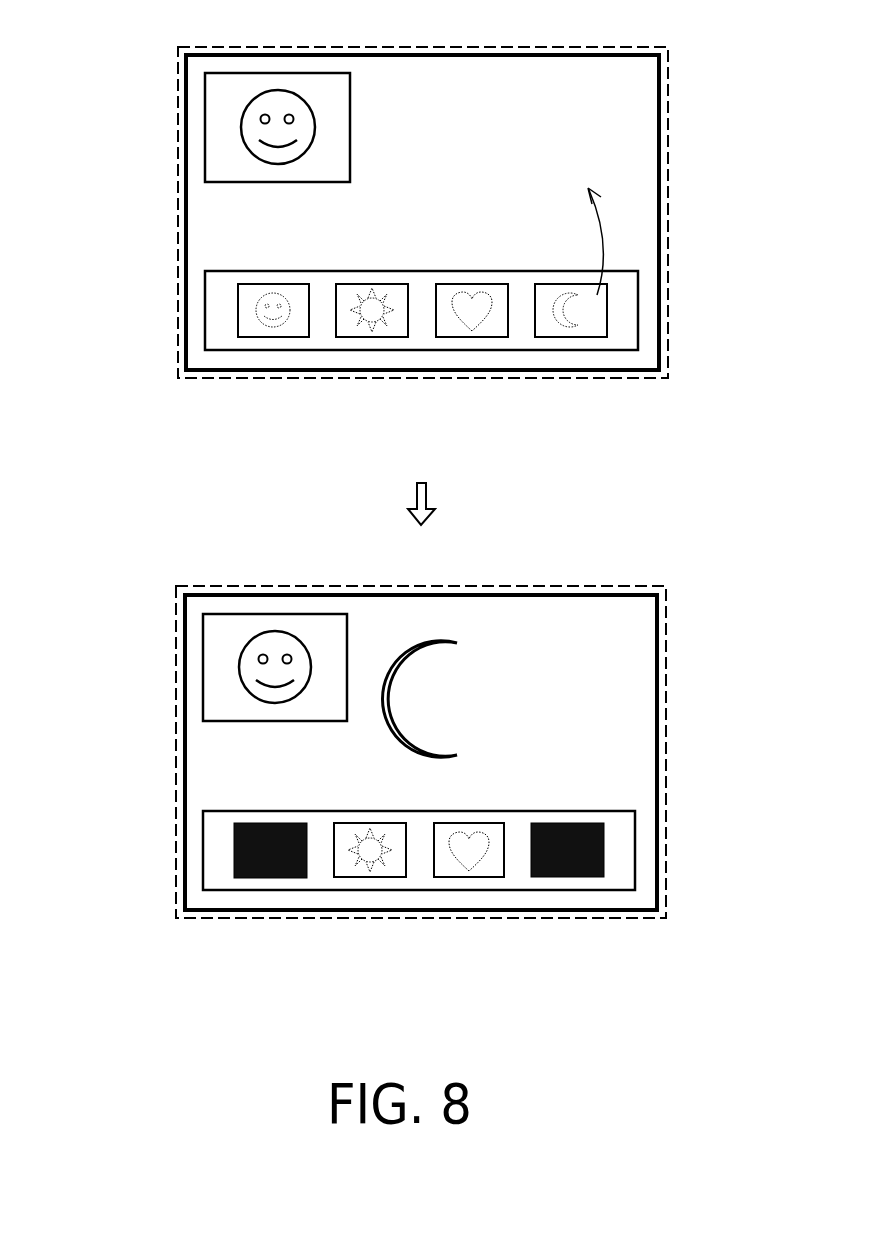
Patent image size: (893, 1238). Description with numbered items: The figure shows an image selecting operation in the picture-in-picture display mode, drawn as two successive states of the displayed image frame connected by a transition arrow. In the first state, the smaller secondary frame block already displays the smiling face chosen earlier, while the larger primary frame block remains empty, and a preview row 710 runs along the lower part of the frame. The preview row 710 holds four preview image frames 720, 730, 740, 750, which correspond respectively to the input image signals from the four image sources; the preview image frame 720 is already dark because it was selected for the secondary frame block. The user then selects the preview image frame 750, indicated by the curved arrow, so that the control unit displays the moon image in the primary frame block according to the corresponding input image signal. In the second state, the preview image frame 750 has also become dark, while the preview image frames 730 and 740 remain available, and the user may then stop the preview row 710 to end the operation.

The preview row 710 is at (638, 310).
The preview image frame 720 is at (273, 337).
The preview image frame 730 is at (372, 337).
The preview image frame 740 is at (472, 337).
The preview image frame 750 is at (571, 337).